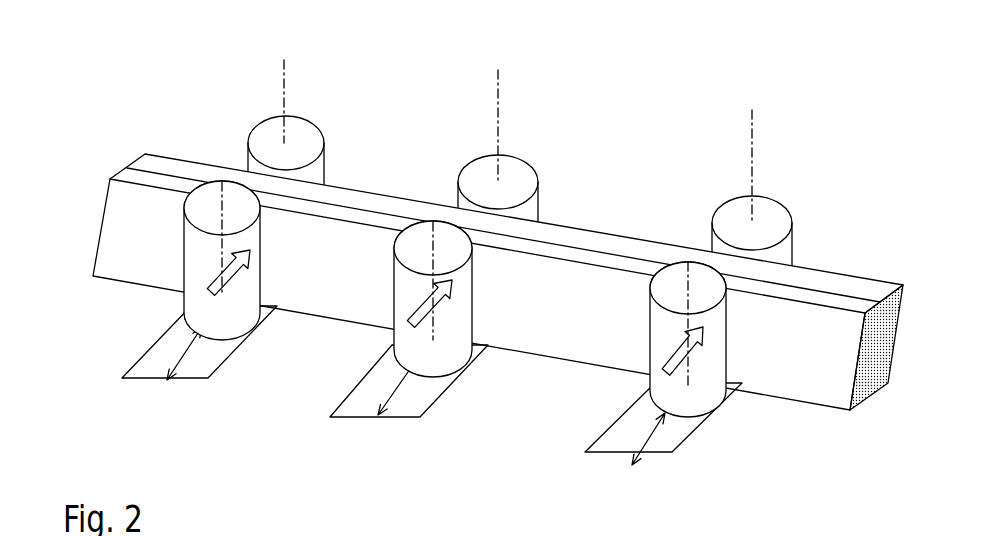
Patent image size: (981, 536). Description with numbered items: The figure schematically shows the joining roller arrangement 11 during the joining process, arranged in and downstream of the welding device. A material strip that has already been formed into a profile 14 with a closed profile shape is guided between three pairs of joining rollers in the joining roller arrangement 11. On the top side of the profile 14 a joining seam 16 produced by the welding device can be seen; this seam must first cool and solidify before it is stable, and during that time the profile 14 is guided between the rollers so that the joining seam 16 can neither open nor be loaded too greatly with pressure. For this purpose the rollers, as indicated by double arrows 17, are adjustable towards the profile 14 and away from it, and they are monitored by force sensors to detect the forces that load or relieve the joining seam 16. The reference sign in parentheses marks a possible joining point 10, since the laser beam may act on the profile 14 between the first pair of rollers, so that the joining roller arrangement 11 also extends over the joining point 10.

The joining point 10 is at (242, 171).
The joining roller arrangement 11 is at (630, 127).
The profile 14 is at (121, 218).
The joining seam 16 is at (815, 288).
The double arrows 17 is at (172, 378).